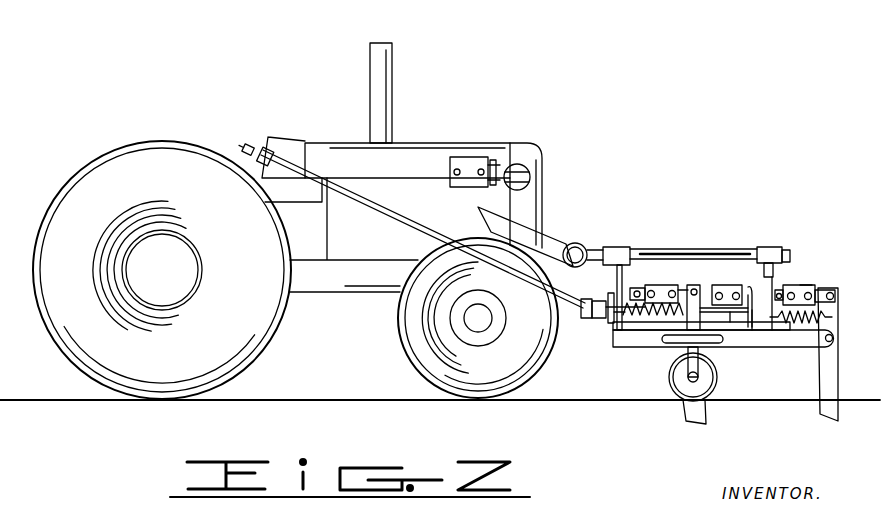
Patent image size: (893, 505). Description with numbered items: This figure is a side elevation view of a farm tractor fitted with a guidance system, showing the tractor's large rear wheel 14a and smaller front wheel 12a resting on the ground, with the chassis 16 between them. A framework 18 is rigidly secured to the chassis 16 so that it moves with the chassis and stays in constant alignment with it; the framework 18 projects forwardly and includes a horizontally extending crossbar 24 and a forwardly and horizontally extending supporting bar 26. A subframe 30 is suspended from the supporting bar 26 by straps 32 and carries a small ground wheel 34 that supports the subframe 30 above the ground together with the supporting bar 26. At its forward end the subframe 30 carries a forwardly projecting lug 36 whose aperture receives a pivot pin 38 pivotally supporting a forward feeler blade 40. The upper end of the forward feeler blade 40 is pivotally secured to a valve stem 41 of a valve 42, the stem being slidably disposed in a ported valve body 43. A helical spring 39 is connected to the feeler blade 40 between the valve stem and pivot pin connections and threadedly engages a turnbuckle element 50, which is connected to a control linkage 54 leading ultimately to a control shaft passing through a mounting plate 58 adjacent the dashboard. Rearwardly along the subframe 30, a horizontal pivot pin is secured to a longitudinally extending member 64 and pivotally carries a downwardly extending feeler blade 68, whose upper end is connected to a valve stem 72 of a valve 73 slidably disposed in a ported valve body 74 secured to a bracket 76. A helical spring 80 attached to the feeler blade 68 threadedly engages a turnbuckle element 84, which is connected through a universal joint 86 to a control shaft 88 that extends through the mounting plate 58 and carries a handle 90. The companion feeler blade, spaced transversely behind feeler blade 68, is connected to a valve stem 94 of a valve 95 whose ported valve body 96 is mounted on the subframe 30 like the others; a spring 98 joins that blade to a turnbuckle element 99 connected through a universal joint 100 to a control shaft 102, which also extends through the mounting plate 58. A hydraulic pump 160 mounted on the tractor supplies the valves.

The rear wheel 14a is at (188, 360).
The front wheel 12a is at (498, 372).
The chassis 16 is at (330, 278).
The framework 18 is at (556, 220).
The crossbar 24 is at (582, 250).
The supporting bar 26 is at (640, 247).
The subframe 30 is at (778, 352).
The strap 32 is at (625, 248).
The ground wheel 34 is at (682, 392).
The forwardly projecting lug 36 is at (796, 348).
The pivot pin 38 is at (834, 338).
The helical spring 39 is at (828, 324).
The forward feeler blade 40 is at (836, 381).
The valve stem 41 is at (826, 290).
The valve 42 is at (810, 284).
The ported valve body 43 is at (795, 287).
The turnbuckle element 50 is at (716, 340).
The control linkage 54 is at (732, 322).
The mounting plate 58 is at (263, 150).
The longitudinally extending member 64 is at (686, 360).
The feeler blade 68 is at (706, 415).
The valve stem 72 is at (724, 280).
The valve 73 is at (737, 292).
The ported valve body 74 is at (750, 290).
The bracket 76 is at (750, 330).
The helical spring 80 is at (662, 320).
The turnbuckle element 84 is at (606, 306).
The universal joint 86 is at (582, 302).
The control shaft 88 is at (438, 222).
The handle 90 is at (240, 146).
The valve stem 94 is at (697, 285).
The valve 95 is at (676, 280).
The ported valve body 96 is at (655, 286).
The spring 98 is at (628, 332).
The turnbuckle element 99 is at (608, 325).
The universal joint 100 is at (602, 320).
The control shaft 102 is at (414, 232).
The hydraulic pump 160 is at (470, 165).